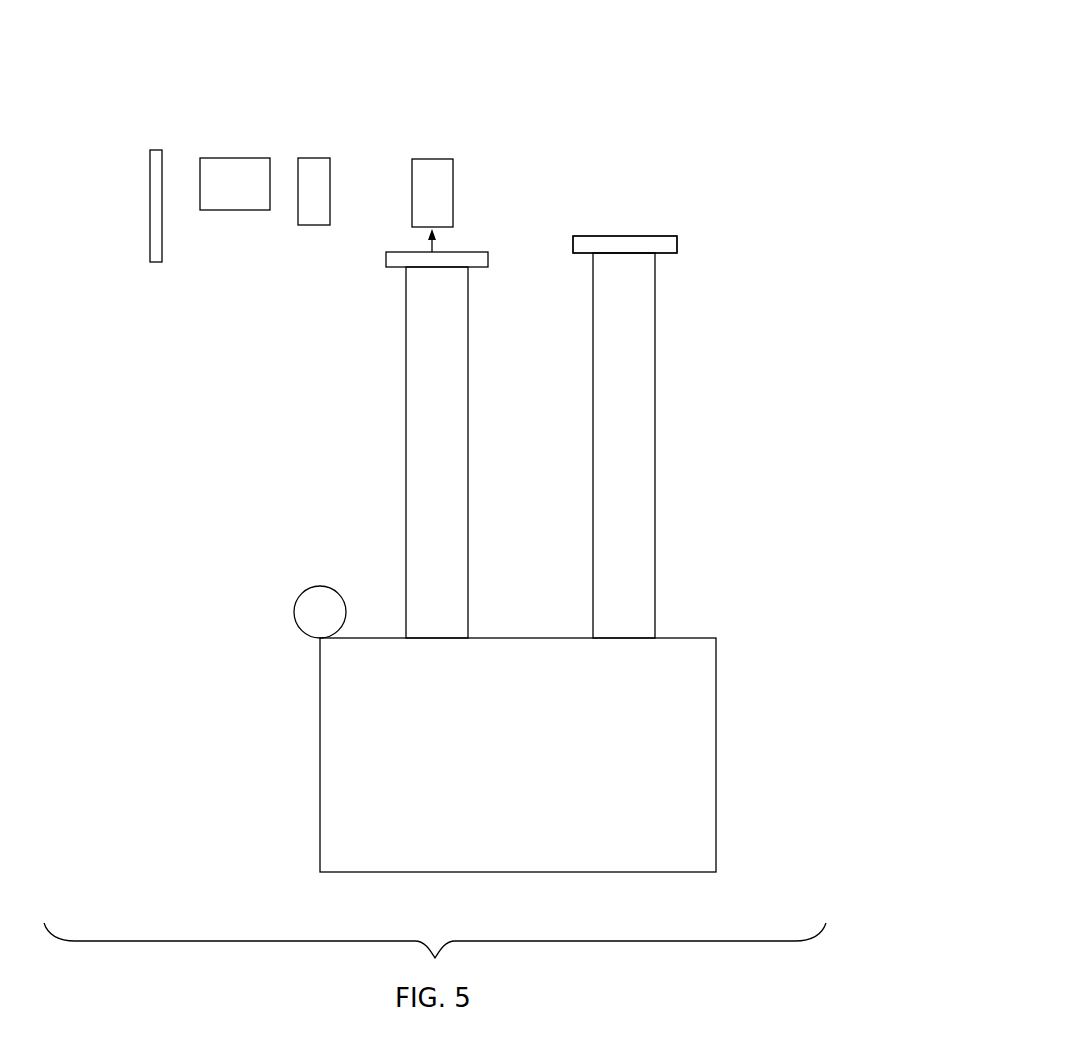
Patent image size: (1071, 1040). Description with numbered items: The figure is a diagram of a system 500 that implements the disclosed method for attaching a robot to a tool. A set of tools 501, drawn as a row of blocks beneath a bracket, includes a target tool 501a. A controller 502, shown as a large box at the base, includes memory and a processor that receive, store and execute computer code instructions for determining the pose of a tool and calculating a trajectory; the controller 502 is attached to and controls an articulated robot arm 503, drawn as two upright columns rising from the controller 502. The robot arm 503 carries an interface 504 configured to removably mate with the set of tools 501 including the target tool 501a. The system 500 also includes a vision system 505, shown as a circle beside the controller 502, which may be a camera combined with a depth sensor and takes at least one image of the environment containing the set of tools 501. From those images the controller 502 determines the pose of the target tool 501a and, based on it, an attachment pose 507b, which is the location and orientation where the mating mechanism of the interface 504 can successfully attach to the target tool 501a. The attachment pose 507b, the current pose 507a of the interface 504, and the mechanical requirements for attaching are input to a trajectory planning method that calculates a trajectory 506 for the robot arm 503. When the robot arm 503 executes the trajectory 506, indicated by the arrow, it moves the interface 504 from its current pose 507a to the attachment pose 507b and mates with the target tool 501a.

The system 500 is at (657, 67).
The set of tools 501 is at (460, 120).
The target tool 501a is at (453, 195).
The controller 502 is at (320, 787).
The articulated robot arm 503 is at (656, 533).
The interface 504 is at (677, 245).
The vision system 505 is at (294, 612).
The trajectory 506 is at (436, 244).
The current pose 507a is at (597, 237).
The attachment pose 507b is at (405, 251).